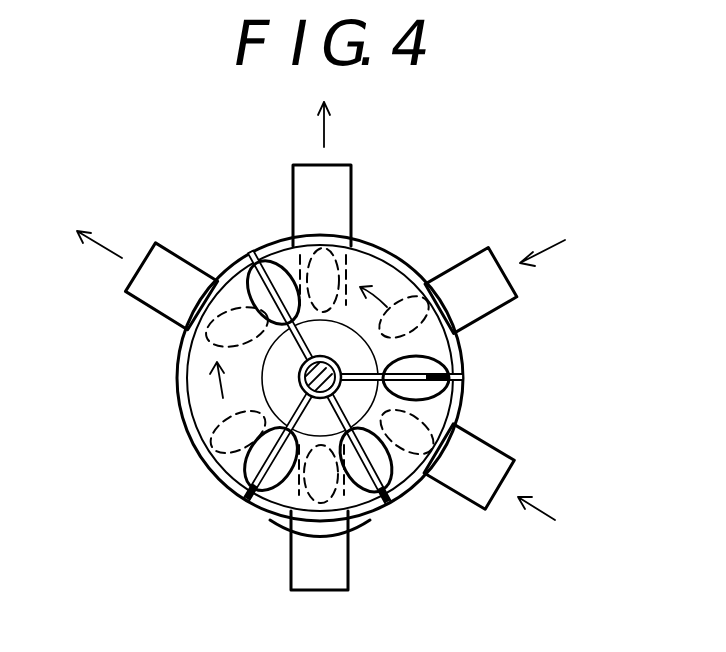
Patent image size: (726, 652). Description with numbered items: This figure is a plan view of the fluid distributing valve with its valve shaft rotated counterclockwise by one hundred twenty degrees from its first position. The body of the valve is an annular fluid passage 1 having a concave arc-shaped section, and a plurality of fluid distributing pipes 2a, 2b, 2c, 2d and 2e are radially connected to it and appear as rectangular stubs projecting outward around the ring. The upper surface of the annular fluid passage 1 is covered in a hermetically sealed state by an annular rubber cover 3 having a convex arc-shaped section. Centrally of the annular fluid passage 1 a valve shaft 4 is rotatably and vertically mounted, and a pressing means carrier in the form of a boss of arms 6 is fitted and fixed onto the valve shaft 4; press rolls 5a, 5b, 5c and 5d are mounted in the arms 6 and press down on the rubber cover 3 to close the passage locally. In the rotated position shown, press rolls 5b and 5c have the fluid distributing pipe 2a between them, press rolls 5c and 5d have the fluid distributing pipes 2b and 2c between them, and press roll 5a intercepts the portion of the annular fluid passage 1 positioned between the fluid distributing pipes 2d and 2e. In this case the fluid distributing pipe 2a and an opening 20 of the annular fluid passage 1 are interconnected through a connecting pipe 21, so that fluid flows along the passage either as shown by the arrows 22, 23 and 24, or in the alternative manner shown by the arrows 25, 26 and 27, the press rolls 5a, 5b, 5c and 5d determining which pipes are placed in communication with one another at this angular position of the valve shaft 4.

The annular fluid passage 1 is at (462, 407).
The fluid distributing pipe 2a is at (157, 255).
The fluid distributing pipe 2b is at (302, 175).
The fluid distributing pipe 2c is at (485, 260).
The fluid distributing pipe 2d is at (495, 460).
The fluid distributing pipe 2e is at (300, 562).
The annular rubber cover 3 is at (368, 267).
The valve shaft 4 is at (341, 364).
The press roll 5a is at (393, 492).
The press roll 5b is at (257, 470).
The press roll 5c is at (256, 281).
The press roll 5d is at (446, 366).
The arms 6 is at (464, 381).
The opening 20 is at (243, 433).
The connecting pipe 21 is at (323, 532).
The arrow 22 is at (548, 248).
The arrow 23 is at (382, 298).
The arrow 24 is at (325, 127).
The arrow 25 is at (542, 512).
The arrow 26 is at (217, 388).
The arrow 27 is at (98, 244).